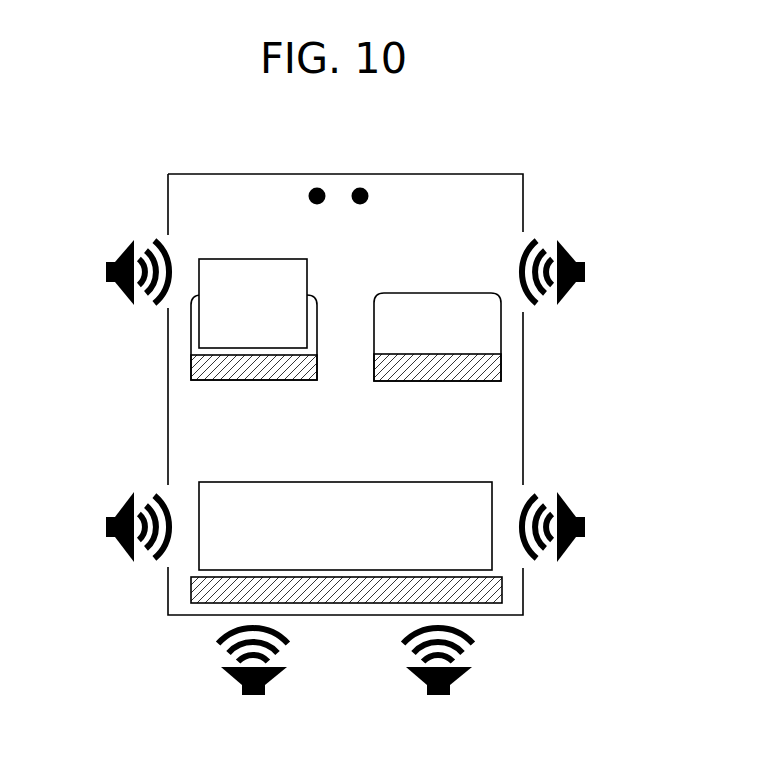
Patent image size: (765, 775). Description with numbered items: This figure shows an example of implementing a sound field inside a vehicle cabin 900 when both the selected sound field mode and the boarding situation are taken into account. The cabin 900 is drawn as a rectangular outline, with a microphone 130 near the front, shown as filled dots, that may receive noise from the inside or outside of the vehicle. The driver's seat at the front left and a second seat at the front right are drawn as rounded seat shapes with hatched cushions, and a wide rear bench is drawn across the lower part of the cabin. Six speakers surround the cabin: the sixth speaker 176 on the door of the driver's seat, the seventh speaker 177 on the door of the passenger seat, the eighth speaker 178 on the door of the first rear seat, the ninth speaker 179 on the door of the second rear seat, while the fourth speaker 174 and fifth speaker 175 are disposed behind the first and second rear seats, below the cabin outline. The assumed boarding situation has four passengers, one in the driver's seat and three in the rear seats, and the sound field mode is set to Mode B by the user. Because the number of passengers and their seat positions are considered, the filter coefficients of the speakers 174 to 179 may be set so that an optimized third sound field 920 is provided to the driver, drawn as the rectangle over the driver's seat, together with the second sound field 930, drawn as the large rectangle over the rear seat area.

The vehicle 900 is at (442, 174).
The microphone 130 is at (359, 187).
The third sound field 920 is at (254, 259).
The second sound field 930 is at (254, 482).
The fourth speaker 174 is at (254, 697).
The fifth speaker 175 is at (439, 697).
The sixth speaker 176 is at (106, 272).
The seventh speaker 177 is at (585, 272).
The eighth speaker 178 is at (106, 527).
The ninth speaker 179 is at (585, 527).